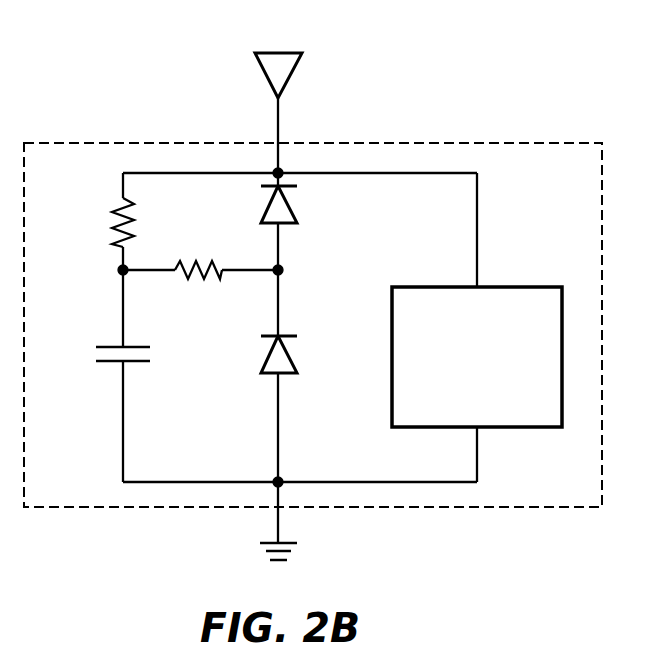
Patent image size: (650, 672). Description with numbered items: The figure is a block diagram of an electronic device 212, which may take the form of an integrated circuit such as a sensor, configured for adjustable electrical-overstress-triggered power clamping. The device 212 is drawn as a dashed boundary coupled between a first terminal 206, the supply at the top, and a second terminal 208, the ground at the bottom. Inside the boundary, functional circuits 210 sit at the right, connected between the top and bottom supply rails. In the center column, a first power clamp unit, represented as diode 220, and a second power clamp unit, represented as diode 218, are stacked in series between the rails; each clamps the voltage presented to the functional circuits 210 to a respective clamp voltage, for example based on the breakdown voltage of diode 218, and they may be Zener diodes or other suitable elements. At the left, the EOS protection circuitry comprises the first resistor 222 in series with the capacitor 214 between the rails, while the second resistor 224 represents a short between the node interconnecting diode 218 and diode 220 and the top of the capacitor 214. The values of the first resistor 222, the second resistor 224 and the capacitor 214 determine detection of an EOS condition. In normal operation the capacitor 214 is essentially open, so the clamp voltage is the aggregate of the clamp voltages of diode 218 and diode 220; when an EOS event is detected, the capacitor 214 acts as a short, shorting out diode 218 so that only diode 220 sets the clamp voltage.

The first terminal 206 is at (292, 70).
The second terminal 208 is at (297, 548).
The functional circuits 210 is at (457, 397).
The electronic device 212 is at (573, 186).
The capacitor C1 214 is at (111, 346).
The first power clamp unit (diode) 218 is at (296, 362).
The second power clamp unit (diode) 220 is at (295, 216).
The resistor R1 222 is at (117, 204).
The resistor R2 224 is at (196, 264).